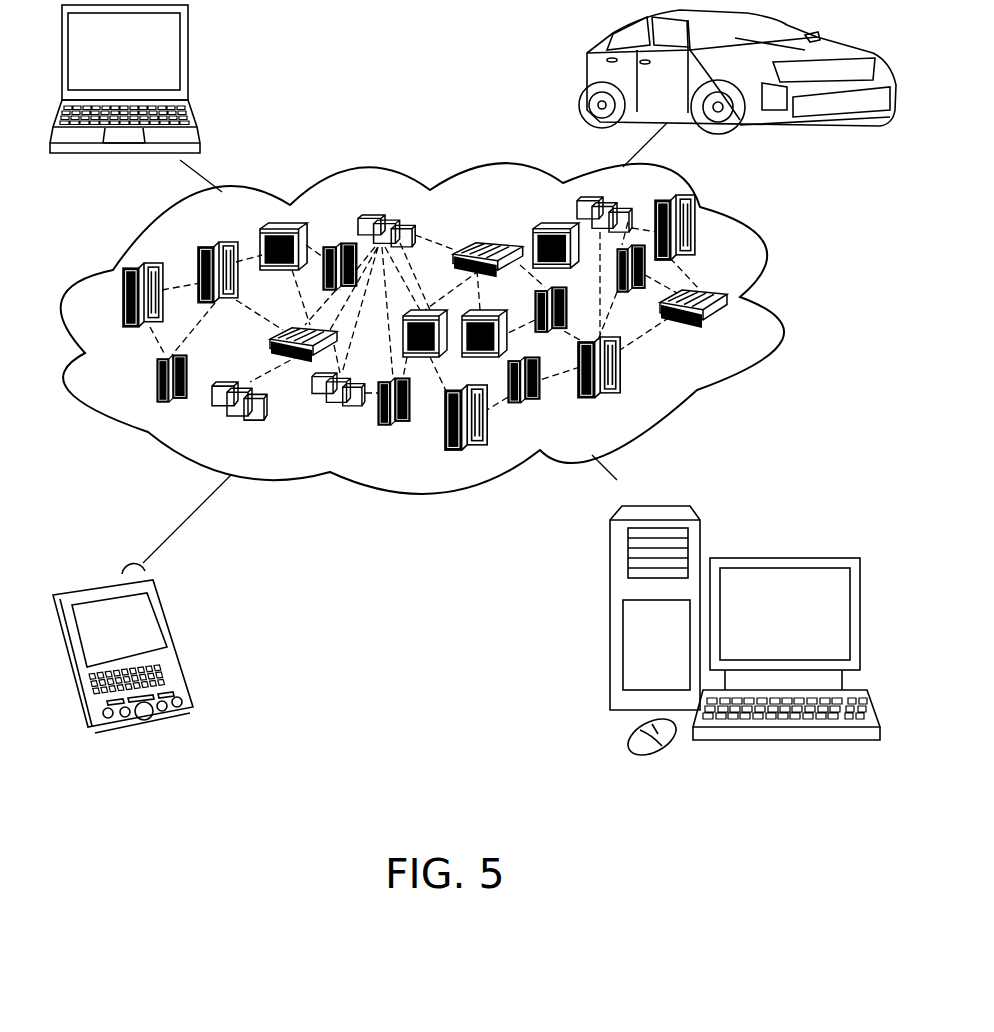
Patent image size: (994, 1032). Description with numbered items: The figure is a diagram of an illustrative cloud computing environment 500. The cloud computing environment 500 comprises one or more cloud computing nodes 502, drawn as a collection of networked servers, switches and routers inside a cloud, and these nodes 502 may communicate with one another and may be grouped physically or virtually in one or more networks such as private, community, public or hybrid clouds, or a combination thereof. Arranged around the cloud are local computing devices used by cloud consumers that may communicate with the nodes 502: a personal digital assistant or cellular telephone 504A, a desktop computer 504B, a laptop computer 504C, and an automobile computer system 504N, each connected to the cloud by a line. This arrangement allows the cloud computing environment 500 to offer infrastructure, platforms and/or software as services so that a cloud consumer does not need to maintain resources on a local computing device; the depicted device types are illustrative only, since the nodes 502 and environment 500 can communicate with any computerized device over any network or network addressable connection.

The cloud computing environment 500 is at (737, 297).
The cloud computing nodes 502 is at (728, 325).
The personal digital assistant or cellular telephone 504A is at (167, 610).
The desktop computer 504B is at (772, 557).
The laptop computer 504C is at (187, 33).
The automobile computer system 504N is at (587, 77).